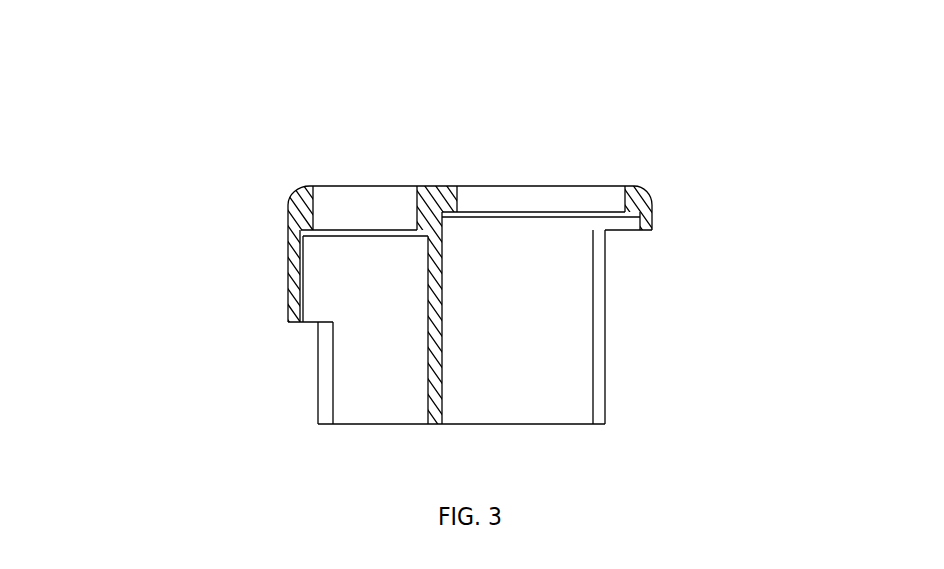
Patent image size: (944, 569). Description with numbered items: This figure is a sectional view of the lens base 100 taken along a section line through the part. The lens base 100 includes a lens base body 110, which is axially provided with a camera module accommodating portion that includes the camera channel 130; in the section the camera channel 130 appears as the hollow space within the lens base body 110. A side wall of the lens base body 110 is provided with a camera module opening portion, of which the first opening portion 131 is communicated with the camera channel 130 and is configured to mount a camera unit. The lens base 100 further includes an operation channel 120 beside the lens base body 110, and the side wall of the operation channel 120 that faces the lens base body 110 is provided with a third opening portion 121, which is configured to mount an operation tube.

The lens base 100 is at (212, 105).
The lens base body 110 is at (448, 161).
The operation channel 120 is at (338, 284).
The third opening portion 121 is at (281, 377).
The camera channel 130 is at (530, 318).
The first opening portion 131 is at (654, 286).